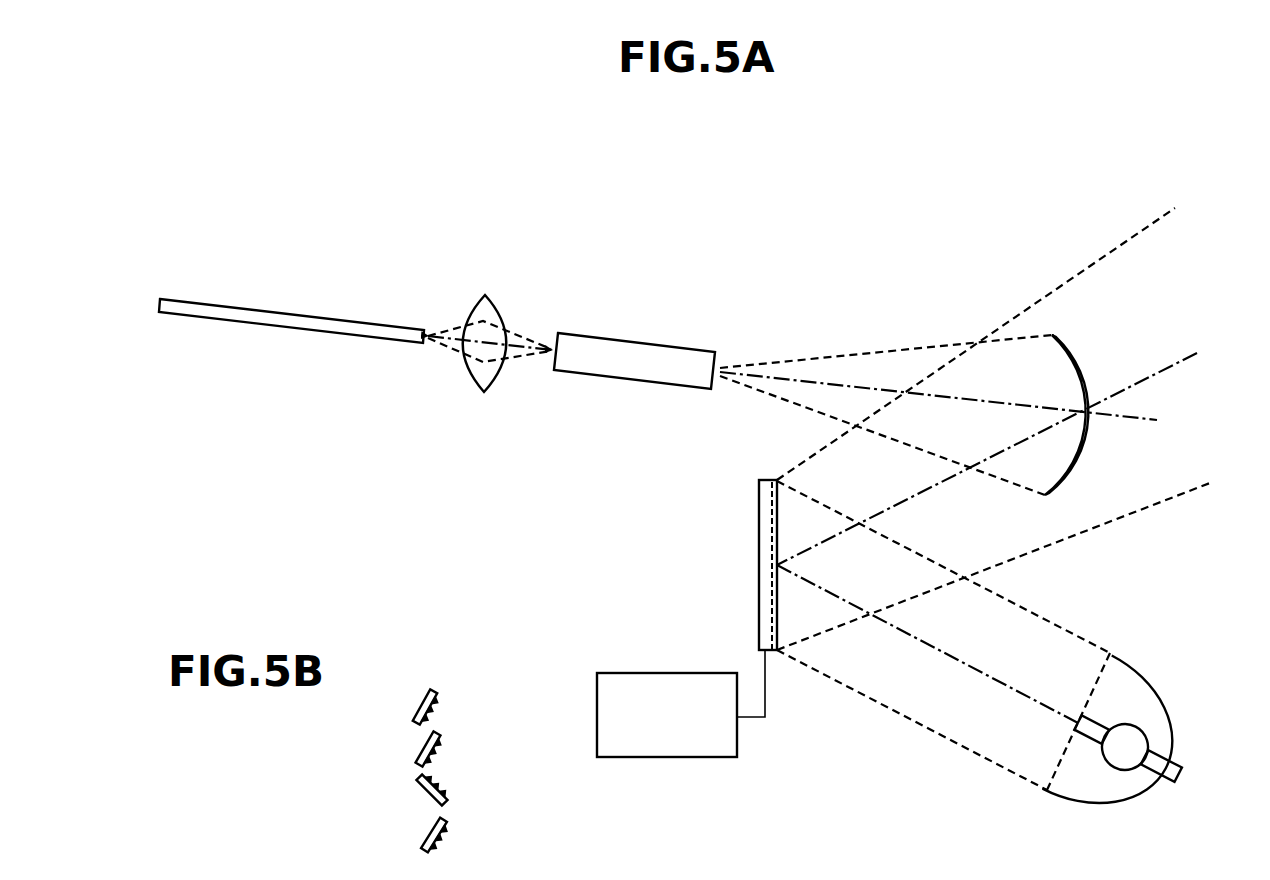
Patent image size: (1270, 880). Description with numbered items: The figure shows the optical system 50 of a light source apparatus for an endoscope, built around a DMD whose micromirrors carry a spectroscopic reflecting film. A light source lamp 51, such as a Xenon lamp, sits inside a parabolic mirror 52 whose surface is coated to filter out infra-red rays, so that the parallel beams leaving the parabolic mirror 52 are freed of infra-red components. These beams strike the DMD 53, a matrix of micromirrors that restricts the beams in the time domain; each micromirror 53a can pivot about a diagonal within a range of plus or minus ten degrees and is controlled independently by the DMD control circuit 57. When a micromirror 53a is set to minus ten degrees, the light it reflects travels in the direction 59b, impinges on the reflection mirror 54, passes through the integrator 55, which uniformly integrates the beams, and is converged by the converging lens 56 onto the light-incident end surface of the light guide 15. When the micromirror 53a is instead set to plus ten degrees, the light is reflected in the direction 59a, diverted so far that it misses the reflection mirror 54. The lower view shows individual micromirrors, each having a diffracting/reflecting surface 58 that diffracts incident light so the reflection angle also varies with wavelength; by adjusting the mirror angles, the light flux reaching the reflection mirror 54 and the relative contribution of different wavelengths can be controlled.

In FIG. 5A, the light guide 15 is at (353, 318).
In FIG. 5A, the optical system 50 is at (909, 192).
In FIG. 5A, the light source lamp 51 is at (1183, 773).
In FIG. 5A, the parabolic mirror 52 is at (1150, 680).
In FIG. 5A, the DMD 53 is at (726, 565).
In FIG. 5A, the micromirror 53a is at (771, 493).
In FIG. 5B, the micromirror 53a is at (418, 768).
In FIG. 5A, the reflection mirror 54 is at (1072, 352).
In FIG. 5A, the integrator 55 is at (634, 334).
In FIG. 5A, the converging lens 56 is at (486, 294).
In FIG. 5A, the DMD control circuit 57 is at (667, 758).
In FIG. 5B, the diffracting/reflecting surface 58 is at (441, 710).
In FIG. 5A, the reflection direction at +10° 59a is at (1142, 518).
In FIG. 5A, the reflection direction at −10° 59b is at (1057, 287).